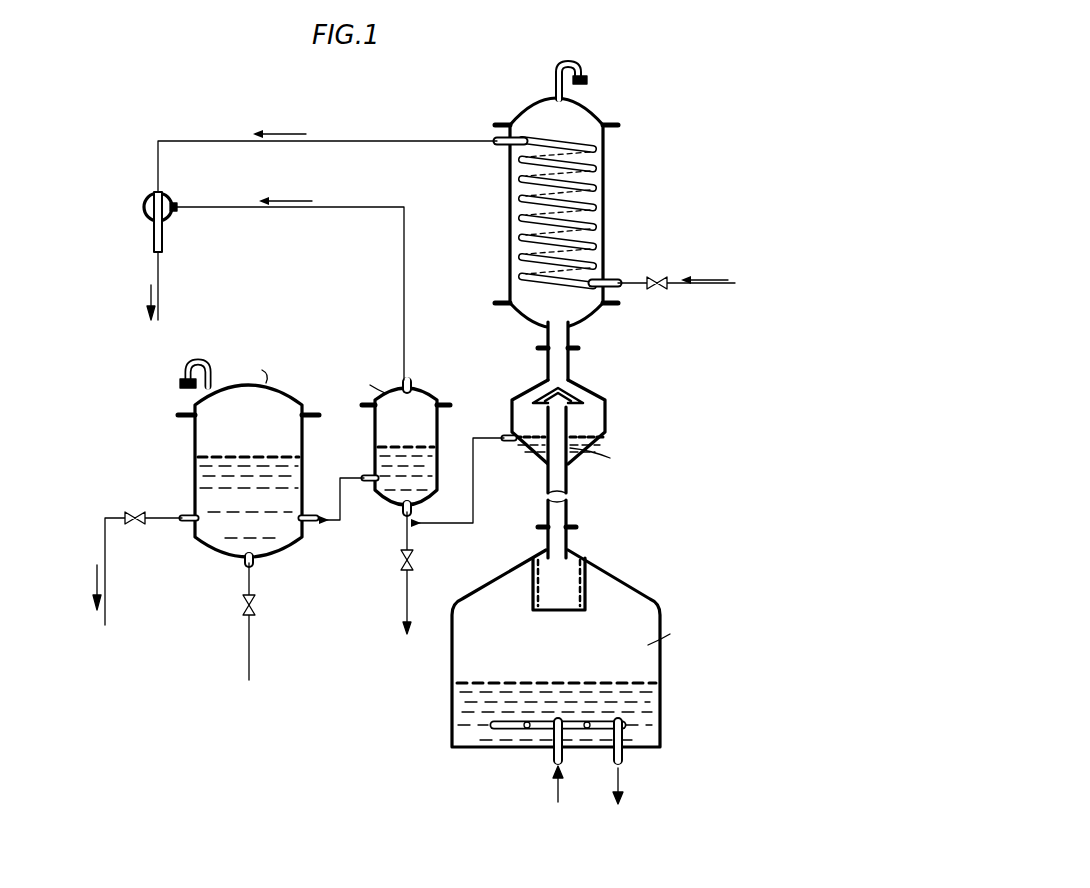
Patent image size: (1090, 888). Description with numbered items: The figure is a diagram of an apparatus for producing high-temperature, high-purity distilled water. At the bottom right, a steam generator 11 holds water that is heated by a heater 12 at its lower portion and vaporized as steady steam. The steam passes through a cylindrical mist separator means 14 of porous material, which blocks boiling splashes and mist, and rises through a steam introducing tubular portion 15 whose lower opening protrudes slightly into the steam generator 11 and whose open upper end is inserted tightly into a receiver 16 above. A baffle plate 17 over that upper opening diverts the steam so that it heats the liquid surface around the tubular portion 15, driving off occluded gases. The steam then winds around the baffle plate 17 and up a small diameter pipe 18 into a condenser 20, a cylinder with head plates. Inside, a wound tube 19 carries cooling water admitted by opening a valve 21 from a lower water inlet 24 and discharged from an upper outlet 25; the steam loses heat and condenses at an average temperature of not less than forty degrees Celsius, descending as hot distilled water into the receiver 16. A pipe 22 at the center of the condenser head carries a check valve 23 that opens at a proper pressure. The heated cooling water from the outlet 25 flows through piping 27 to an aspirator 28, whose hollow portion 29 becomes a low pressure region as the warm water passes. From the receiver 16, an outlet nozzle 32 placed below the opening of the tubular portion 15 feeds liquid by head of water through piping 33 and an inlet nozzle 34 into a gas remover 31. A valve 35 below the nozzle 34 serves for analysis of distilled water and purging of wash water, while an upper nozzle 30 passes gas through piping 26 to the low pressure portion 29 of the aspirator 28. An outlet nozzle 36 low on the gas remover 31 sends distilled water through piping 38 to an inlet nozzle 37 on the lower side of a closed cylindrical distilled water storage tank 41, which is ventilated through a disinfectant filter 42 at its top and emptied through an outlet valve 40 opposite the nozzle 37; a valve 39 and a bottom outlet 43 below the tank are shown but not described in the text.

The steam generator 11 is at (588, 659).
The heater 12 is at (512, 726).
The cylindrical mist separator means 14 is at (588, 578).
The steam introducing tubular portion 15 is at (568, 481).
The receiver 16 is at (607, 430).
The baffle plate 17 is at (565, 396).
The small diameter pipe 18 is at (570, 335).
The wound tube 19 is at (596, 151).
The condenser 20 is at (605, 208).
The valve 21 is at (660, 276).
The pipe 22 is at (557, 62).
The check valve 23 is at (592, 80).
The water inlet 24 is at (608, 277).
The upper outlet 25 is at (498, 150).
The piping 26 is at (342, 206).
The piping 27 is at (185, 140).
The aspirator 28 is at (162, 242).
The hollow portion 29 is at (177, 202).
The upper nozzle 30 is at (412, 380).
The gas remover 31 is at (422, 431).
The outlet nozzle 32 is at (506, 444).
The piping 33 is at (474, 436).
The inlet nozzle 34 is at (403, 514).
The valve 35 is at (414, 560).
The outlet nozzle 36 is at (368, 484).
The inlet nozzle 37 is at (312, 528).
The piping 38 is at (342, 522).
The storage drain valve 39 is at (256, 606).
The outlet valve 40 is at (134, 508).
The distilled water storage tank 41 is at (264, 438).
The disinfectant filter 42 is at (178, 382).
The storage bottom outlet 43 is at (242, 561).